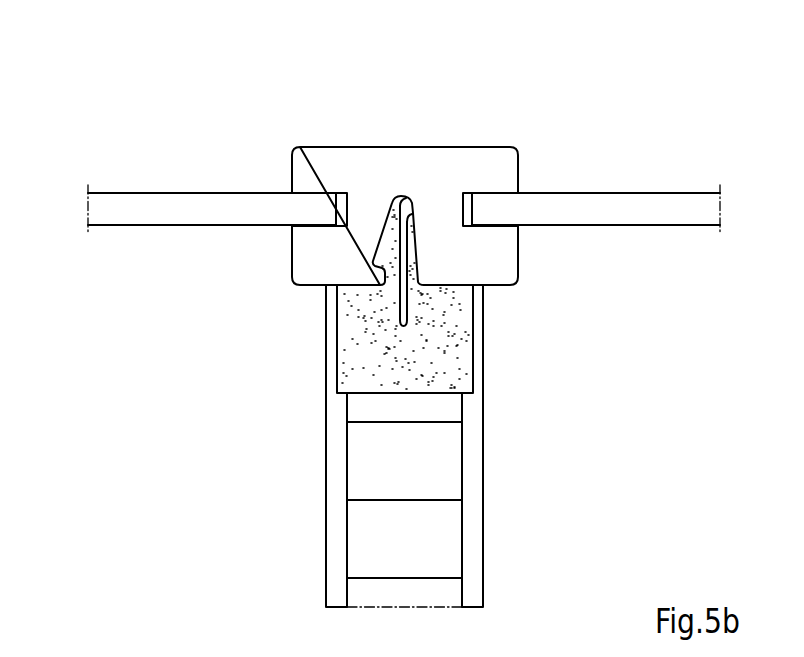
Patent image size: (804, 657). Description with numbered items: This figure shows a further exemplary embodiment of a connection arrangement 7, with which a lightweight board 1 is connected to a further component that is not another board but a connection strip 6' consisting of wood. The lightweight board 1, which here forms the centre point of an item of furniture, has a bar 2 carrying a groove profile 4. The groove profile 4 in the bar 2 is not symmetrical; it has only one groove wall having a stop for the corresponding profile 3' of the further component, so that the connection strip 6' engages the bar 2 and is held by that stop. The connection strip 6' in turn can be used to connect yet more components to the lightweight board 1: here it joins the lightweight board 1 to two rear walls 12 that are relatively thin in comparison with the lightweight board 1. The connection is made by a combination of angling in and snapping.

The lightweight board 1 is at (510, 483).
The bar 2 is at (453, 347).
The corresponding profile 3' is at (300, 268).
The groove profile 4 is at (408, 198).
The connection strip 6' is at (405, 159).
The connection arrangement 7 is at (252, 118).
The rear walls 12 is at (137, 207).